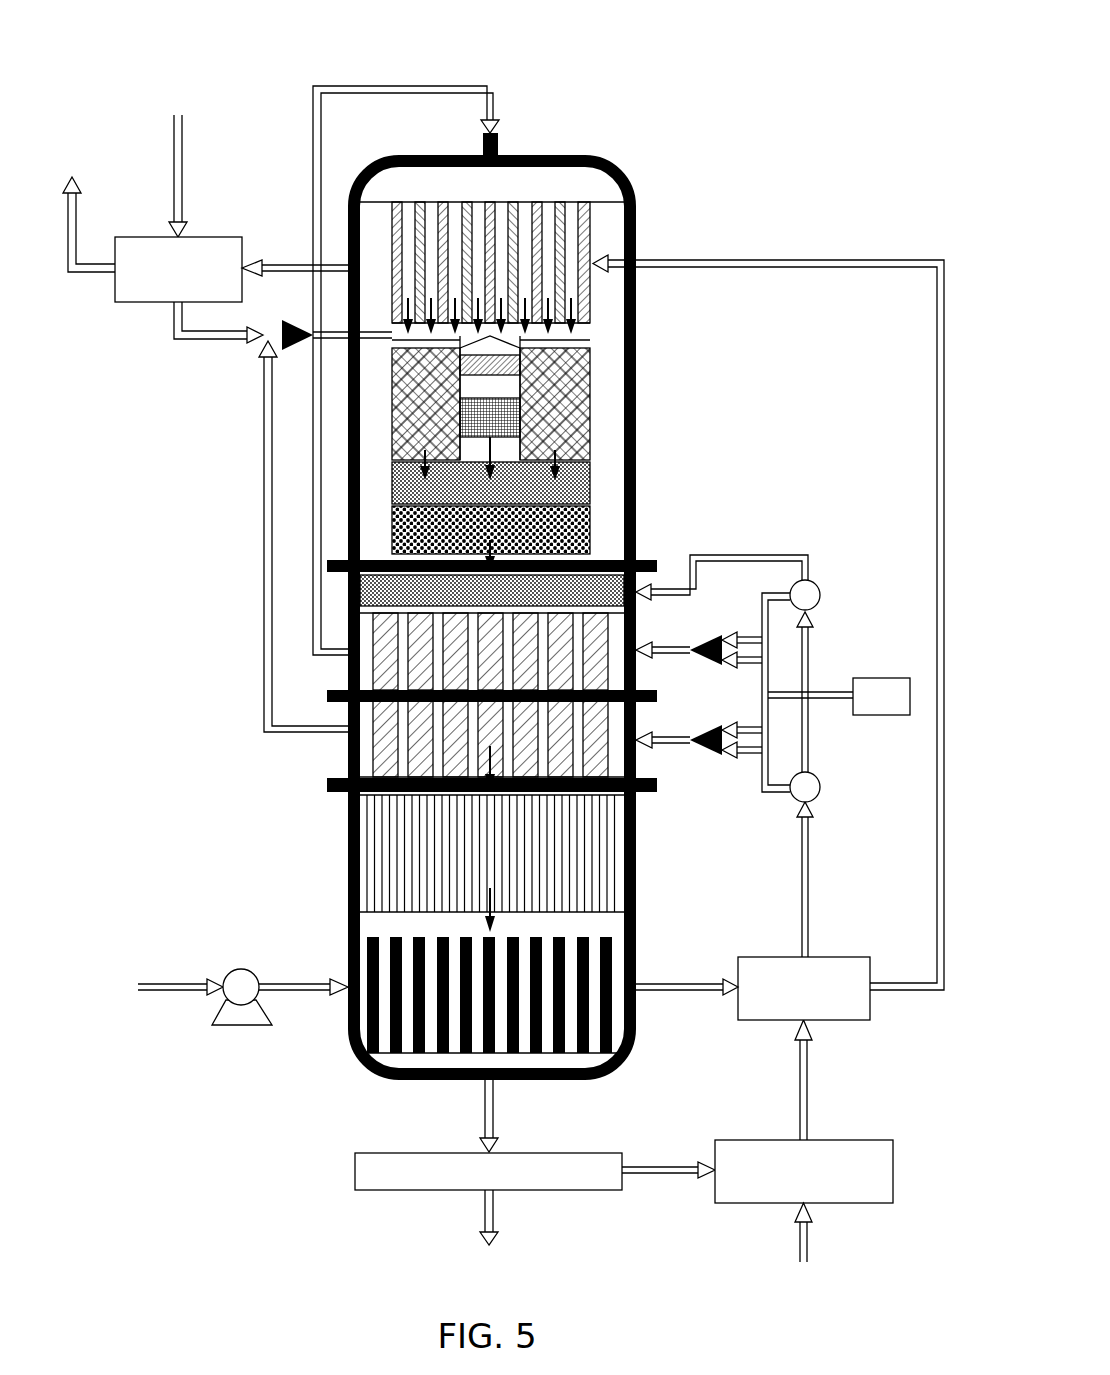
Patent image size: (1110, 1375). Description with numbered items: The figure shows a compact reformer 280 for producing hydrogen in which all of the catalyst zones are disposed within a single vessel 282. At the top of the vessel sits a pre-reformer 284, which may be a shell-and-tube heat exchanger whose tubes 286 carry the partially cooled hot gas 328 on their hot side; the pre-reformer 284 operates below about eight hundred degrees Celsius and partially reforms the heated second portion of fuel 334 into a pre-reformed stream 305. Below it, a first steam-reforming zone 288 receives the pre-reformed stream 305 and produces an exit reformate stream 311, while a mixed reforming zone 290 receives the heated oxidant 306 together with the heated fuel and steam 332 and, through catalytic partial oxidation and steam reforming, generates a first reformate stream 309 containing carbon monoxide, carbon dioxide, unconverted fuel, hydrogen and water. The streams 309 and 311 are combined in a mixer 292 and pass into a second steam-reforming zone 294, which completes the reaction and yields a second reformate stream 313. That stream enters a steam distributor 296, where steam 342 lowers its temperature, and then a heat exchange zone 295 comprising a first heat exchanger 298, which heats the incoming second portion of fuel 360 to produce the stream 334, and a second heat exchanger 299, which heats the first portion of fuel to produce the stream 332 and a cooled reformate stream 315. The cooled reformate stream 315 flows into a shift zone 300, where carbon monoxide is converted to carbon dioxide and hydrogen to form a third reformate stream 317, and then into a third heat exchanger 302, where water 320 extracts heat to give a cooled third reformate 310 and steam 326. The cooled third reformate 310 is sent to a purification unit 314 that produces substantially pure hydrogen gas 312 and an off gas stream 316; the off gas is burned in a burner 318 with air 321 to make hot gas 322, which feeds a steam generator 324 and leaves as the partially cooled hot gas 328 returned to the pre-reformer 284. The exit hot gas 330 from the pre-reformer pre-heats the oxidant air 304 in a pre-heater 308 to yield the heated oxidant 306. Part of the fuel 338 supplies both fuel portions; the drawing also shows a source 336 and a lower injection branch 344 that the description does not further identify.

The compact reformer 280 is at (788, 55).
The single vessel 282 is at (508, 156).
The pre-reformer 284 is at (583, 241).
The tubes 286 is at (527, 210).
The first steam-reforming zone 288 is at (462, 393).
The mixed reforming zone 290 is at (522, 447).
The mixer 292 is at (572, 491).
The second steam-reforming zone 294 is at (590, 519).
The heat exchange zone 295 is at (333, 612).
The steam distributor 296 is at (360, 594).
The first heat exchanger 298 is at (385, 676).
The second heat exchanger 299 is at (385, 744).
The shift zone 300 is at (598, 882).
The third heat exchanger 302 is at (610, 958).
The oxidant 304 is at (178, 114).
The pre-reformed stream 305 is at (578, 311).
The heated oxidant 306 is at (172, 335).
The pre-heater 308 is at (137, 237).
The first reformate stream 309 is at (440, 408).
The cooled third reformate stream 310 is at (494, 1105).
The exit reformate stream 311 is at (485, 447).
The substantially pure hydrogen gas 312 is at (484, 1210).
The second reformate stream 313 is at (520, 567).
The purification unit 314 is at (414, 1153).
The cooled reformate stream 315 is at (440, 783).
The off gas stream 316 is at (644, 1176).
The third reformate stream 317 is at (490, 928).
The burner 318 is at (848, 1140).
The water 320 is at (296, 984).
The air 321 is at (808, 1240).
The hot gas 322 is at (800, 1091).
The steam generator 324 is at (848, 957).
The steam 326 is at (697, 991).
The partially cooled hot gas 328 is at (776, 260).
The exit hot gas 330 is at (283, 264).
The heated first portion of fuel 332 is at (264, 541).
The heated second portion of fuel 334 is at (313, 452).
The reactant source 336 is at (876, 715).
The fuel 338 is at (830, 692).
The steam 342 is at (780, 554).
The lower injector 344 is at (676, 737).
The incoming second portion of fuel 360 is at (668, 646).